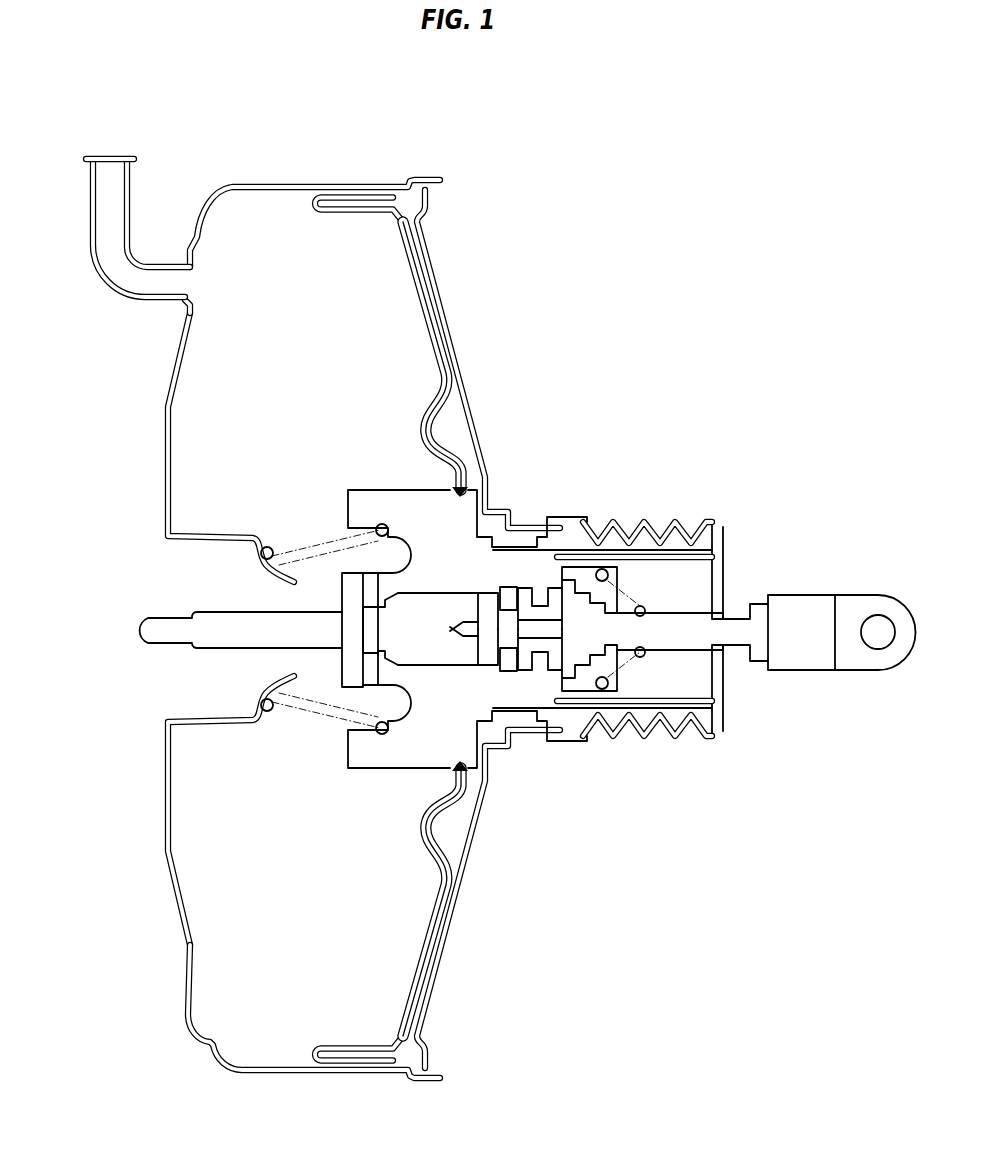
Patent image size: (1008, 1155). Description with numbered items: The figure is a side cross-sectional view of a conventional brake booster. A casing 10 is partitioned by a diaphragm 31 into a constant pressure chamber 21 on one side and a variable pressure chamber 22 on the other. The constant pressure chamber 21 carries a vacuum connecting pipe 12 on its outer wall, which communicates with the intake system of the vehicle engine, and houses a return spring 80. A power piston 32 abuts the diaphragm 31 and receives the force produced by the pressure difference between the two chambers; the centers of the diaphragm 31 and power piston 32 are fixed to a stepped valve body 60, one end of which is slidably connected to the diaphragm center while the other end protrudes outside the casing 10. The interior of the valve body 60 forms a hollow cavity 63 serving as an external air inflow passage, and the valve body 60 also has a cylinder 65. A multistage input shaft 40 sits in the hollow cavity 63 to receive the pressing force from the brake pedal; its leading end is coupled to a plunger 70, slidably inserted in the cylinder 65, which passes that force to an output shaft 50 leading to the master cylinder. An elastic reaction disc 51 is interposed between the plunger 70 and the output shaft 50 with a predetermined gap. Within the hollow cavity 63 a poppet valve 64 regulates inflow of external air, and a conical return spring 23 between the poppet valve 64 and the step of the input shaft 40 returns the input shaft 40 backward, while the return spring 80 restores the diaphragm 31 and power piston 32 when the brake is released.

The casing 10 is at (364, 160).
The vacuum connecting pipe 12 is at (91, 207).
The constant pressure chamber 21 is at (313, 381).
The variable pressure chamber 22 is at (462, 444).
The return spring 23 is at (628, 667).
The diaphragm 31 is at (438, 287).
The power piston 32 is at (425, 313).
The input shaft 40 is at (803, 612).
The output shaft 50 is at (143, 620).
The reaction disc 51 is at (350, 665).
The valve body 60 is at (446, 537).
The hollow cavity 63 is at (672, 582).
The poppet valve 64 is at (573, 684).
The cylinder 65 is at (407, 660).
The plunger 70 is at (490, 650).
The return spring 80 is at (302, 537).